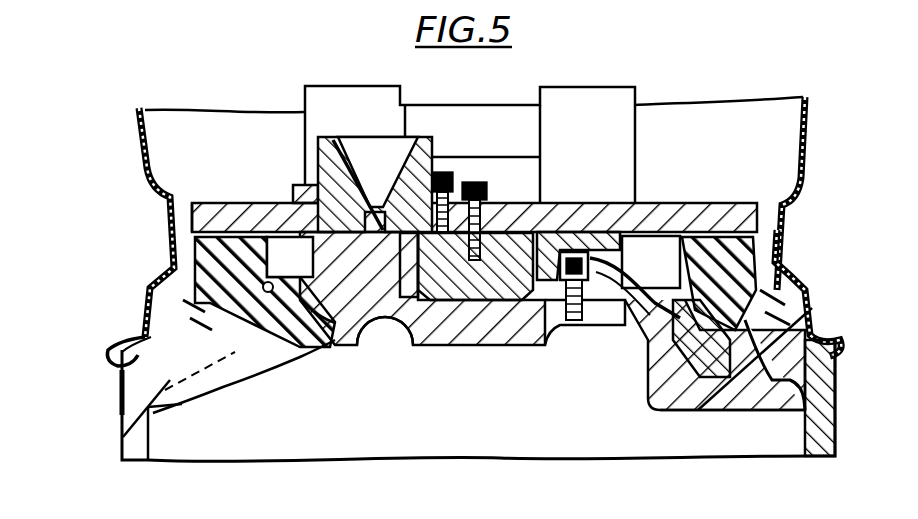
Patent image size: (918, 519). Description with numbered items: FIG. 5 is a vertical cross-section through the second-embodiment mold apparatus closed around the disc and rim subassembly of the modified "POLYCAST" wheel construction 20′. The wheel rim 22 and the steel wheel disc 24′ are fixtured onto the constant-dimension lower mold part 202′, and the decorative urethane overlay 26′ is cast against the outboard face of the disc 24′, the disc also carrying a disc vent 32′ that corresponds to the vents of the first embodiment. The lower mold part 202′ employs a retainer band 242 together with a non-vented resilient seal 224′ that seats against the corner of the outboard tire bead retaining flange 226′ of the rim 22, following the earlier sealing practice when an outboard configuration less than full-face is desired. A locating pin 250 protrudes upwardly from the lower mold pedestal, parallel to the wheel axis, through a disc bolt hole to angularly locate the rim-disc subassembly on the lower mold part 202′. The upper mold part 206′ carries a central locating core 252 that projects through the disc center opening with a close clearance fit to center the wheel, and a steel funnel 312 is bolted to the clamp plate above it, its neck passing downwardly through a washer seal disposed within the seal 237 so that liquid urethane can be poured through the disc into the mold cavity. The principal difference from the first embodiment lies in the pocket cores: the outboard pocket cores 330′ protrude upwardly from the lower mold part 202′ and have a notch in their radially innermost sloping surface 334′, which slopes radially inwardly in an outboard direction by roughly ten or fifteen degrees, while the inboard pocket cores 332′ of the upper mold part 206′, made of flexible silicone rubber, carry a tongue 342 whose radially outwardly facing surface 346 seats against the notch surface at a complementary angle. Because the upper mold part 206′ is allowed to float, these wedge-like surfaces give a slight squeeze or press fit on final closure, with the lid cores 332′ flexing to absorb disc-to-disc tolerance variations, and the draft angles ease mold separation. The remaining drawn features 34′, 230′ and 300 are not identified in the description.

The wheel construction 20′ is at (137, 136).
The wheel rim 22 is at (180, 211).
The wheel disc 24′ is at (317, 262).
The decorative urethane overlay 26′ is at (284, 343).
The disc vent 32′ is at (290, 280).
The recess 34′ is at (340, 357).
The lower mold part 202′ is at (120, 437).
The upper mold part 206′ is at (232, 200).
The non-vented resilient seal 224′ is at (118, 367).
The outboard tire bead retaining flange 226′ is at (122, 333).
The base wall 230′ is at (335, 323).
The seal 237 is at (612, 246).
The retainer band 242 is at (120, 390).
The locating pin 250 is at (568, 297).
The central locating core 252 is at (492, 212).
The top block 300 is at (540, 97).
The steel funnel 312 is at (435, 137).
The outboard pocket cores 330′ is at (178, 368).
The inboard pocket cores 332′ is at (198, 246).
The radially innermost sloping surface 334′ is at (257, 380).
The tongue 342 is at (196, 322).
The radially outwardly facing surface 346 is at (767, 365).